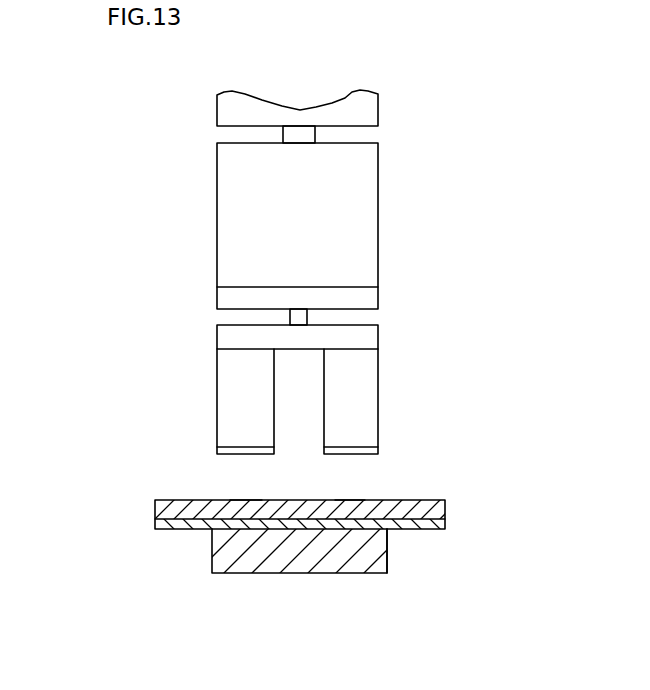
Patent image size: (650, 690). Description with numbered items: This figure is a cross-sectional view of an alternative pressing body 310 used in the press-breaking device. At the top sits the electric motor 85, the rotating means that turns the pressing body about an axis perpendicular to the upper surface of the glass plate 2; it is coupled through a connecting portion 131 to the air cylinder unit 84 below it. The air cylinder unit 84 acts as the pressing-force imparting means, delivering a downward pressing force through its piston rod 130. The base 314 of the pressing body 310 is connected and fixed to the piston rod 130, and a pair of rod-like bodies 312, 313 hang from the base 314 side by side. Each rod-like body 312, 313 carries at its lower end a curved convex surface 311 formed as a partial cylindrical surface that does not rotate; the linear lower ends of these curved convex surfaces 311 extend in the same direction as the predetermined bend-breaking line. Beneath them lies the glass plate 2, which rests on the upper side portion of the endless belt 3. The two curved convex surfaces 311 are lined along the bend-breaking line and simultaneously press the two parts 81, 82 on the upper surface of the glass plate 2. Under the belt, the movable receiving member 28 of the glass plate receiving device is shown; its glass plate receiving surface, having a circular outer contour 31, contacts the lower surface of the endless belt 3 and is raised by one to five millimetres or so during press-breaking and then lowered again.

The electric motor 85 is at (235, 110).
The connecting portion 131 is at (300, 135).
The air cylinder unit 84 is at (353, 207).
The piston rod 130 is at (297, 318).
The pressing body 310 is at (260, 396).
The base 314 is at (243, 335).
The rod-like body 312 is at (230, 367).
The rod-like body 313 is at (358, 373).
The curved convex surface 311 is at (243, 456).
The part 81 is at (250, 500).
The part 82 is at (347, 500).
The glass plate 2 is at (302, 507).
The endless belt 3 is at (427, 525).
The movable receiving member 28 is at (233, 548).
The circular outer contour 31 is at (387, 543).